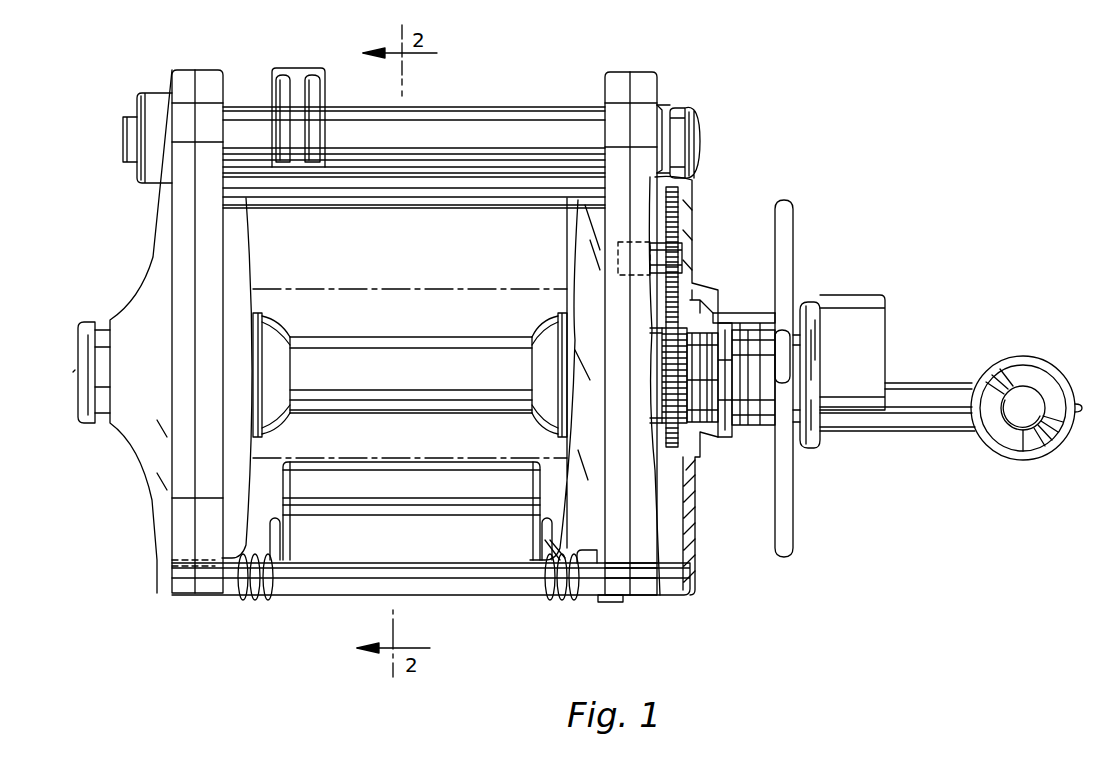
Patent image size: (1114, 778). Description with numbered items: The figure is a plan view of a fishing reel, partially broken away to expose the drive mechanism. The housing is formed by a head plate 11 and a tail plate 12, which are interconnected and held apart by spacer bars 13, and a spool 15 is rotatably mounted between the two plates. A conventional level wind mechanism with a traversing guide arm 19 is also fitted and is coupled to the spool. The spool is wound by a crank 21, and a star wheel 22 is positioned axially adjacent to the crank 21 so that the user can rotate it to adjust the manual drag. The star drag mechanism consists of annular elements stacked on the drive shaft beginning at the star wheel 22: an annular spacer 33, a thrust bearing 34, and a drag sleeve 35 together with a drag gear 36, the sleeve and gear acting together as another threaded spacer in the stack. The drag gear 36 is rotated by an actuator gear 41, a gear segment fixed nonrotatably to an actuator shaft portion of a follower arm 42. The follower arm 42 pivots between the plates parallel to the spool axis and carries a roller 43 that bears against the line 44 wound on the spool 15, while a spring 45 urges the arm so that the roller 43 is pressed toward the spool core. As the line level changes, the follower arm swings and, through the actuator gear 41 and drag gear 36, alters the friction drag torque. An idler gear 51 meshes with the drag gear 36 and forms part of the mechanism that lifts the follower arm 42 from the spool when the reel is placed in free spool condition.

The head plate 11 is at (640, 85).
The tail plate 12 is at (185, 68).
The spacer bars 13 is at (488, 196).
The spool 15 is at (253, 258).
The traversing guide arm 19 is at (297, 75).
The crank 21 is at (925, 390).
The star wheel 22 is at (790, 236).
The annular spacer 33 is at (768, 410).
The thrust bearing 34 is at (748, 330).
The drag sleeve 35 is at (727, 432).
The drag gear 36 is at (695, 300).
The actuator gear 41 is at (678, 528).
The follower arm 42 is at (340, 580).
The roller 43 is at (463, 480).
The line 44 is at (397, 290).
The spring 45 is at (483, 520).
The idler gear 51 is at (672, 215).